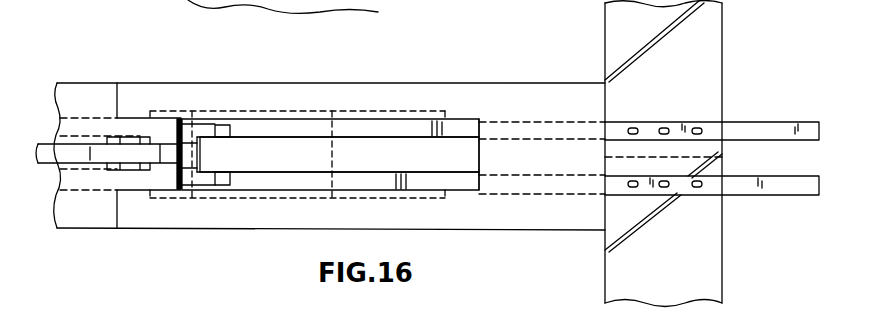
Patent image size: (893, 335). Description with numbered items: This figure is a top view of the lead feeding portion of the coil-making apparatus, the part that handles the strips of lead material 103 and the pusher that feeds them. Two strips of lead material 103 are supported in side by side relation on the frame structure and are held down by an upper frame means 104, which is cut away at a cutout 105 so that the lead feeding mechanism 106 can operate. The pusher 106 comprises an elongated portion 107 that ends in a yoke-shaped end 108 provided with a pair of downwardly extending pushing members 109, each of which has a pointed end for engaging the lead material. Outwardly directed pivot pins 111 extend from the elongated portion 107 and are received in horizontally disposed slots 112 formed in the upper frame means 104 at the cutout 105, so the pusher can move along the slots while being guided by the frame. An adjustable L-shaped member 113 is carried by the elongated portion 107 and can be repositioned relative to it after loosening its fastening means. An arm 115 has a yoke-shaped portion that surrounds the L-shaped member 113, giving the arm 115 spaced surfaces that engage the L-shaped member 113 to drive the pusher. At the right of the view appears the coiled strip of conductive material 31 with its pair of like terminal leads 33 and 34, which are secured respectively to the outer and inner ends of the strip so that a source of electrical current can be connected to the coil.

The strip of conductive material 31 is at (708, 34).
The terminal lead 33 is at (778, 190).
The terminal lead 34 is at (770, 128).
The strips of lead material 103 is at (352, 127).
The upper frame means 104 is at (558, 73).
The cutout 105 is at (458, 117).
The lead feeding mechanism 106 is at (190, 155).
The elongated portion 107 is at (178, 122).
The yoke-shaped end 108 is at (212, 119).
The pushing members 109 is at (230, 128).
The pivot pins 111 is at (192, 111).
The slots 112 is at (332, 111).
The L-shaped member 113 is at (133, 170).
The arm 115 is at (60, 148).